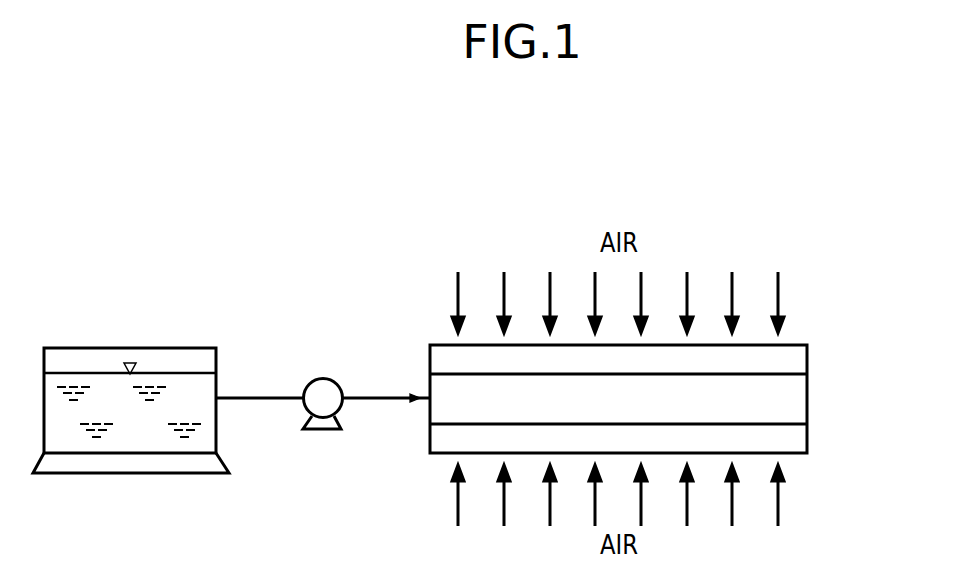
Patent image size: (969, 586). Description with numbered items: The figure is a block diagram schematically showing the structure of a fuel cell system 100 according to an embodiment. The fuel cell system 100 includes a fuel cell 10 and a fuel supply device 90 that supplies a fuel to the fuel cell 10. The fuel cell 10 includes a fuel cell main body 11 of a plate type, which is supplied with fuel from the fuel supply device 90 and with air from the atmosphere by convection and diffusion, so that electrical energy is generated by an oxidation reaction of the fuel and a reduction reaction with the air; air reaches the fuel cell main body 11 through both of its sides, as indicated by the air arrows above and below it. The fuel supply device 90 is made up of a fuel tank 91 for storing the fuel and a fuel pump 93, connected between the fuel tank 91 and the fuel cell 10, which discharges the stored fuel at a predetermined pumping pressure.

The fuel cell system 100 is at (439, 212).
The fuel cell 10 is at (665, 387).
The fuel cell main body 11 is at (808, 386).
The fuel supply device 90 is at (262, 482).
The fuel tank 91 is at (119, 346).
The fuel pump 93 is at (323, 378).